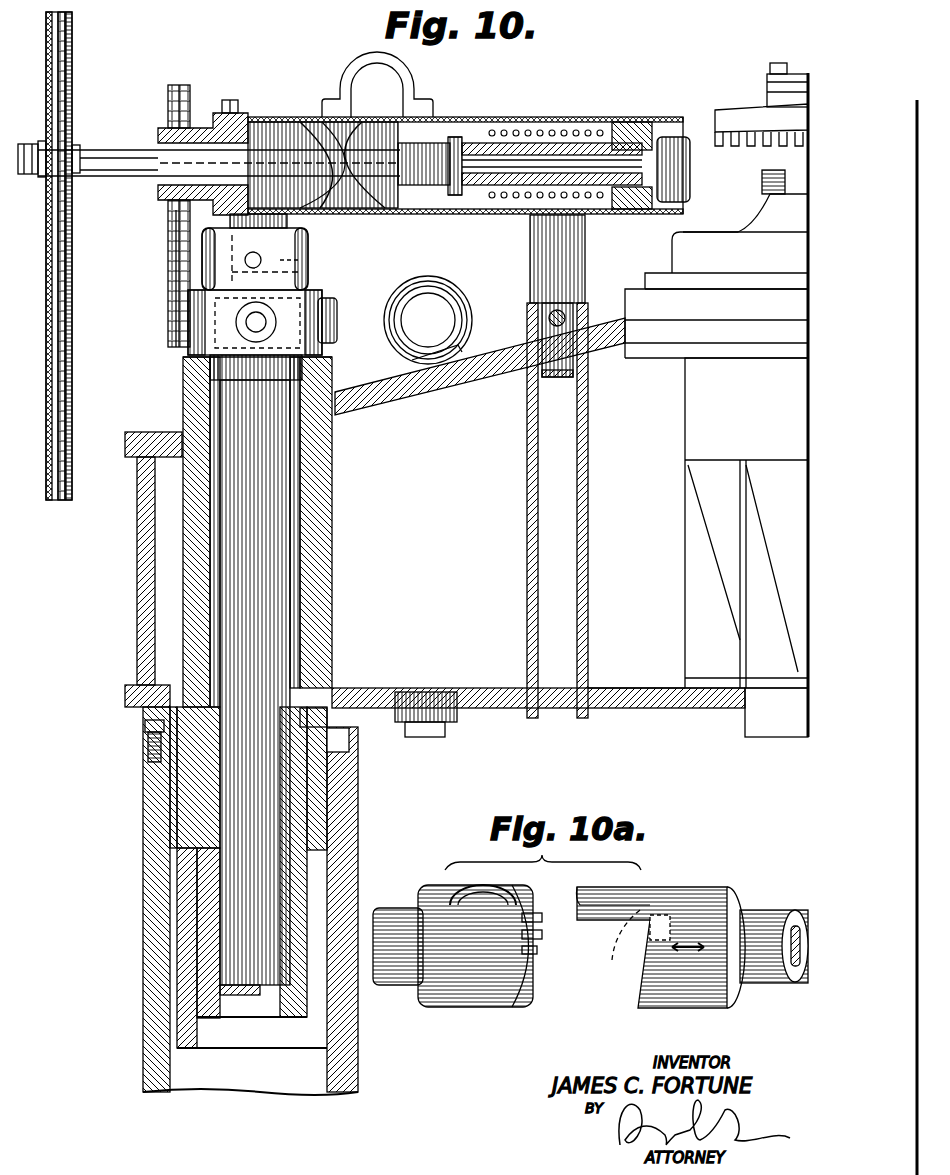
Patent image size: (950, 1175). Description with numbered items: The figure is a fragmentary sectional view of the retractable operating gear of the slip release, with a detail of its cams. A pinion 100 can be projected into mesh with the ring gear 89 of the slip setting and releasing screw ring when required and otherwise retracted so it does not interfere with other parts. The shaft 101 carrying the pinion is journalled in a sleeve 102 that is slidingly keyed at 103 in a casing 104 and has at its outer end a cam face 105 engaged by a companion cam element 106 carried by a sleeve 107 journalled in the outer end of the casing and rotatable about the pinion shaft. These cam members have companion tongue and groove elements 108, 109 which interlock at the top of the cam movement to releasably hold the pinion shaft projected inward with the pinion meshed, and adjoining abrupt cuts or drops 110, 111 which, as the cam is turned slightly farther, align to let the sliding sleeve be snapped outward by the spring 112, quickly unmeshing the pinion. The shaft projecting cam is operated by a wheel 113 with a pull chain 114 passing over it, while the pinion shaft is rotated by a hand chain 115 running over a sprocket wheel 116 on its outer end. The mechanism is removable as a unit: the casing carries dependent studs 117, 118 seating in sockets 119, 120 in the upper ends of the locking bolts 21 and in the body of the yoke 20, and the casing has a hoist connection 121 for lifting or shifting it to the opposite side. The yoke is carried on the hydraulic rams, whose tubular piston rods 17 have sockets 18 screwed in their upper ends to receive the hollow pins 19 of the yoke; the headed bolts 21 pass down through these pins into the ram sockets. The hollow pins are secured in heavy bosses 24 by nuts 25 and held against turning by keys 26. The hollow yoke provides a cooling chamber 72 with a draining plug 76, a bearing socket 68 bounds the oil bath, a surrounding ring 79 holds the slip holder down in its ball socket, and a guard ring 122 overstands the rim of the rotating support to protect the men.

In FIG. 10, the sprocket wheel 116 is at (72, 96).
In FIG. 10, the hand chain 115 is at (70, 418).
In FIG. 10, the shaft 101 is at (120, 166).
In FIG. 10, the wheel 113 is at (168, 222).
In FIG. 10, the dependent stud 117 is at (200, 265).
In FIG. 10, the sleeve 107 is at (205, 128).
In FIG. 10A, the sleeve 107 is at (400, 975).
In FIG. 10, the cam element 106 is at (278, 122).
In FIG. 10A, the cam element 106 is at (520, 1000).
In FIG. 10, the cam face 105 is at (325, 210).
In FIG. 10A, the cam face 105 is at (640, 972).
In FIG. 10, the casing 104 is at (515, 117).
In FIG. 10, the sleeve 102 is at (430, 150).
In FIG. 10A, the sleeve 102 is at (775, 915).
In FIG. 10, the tongue element 108 is at (365, 215).
In FIG. 10A, the tongue element 108 is at (543, 928).
In FIG. 10, the groove element 109 is at (410, 214).
In FIG. 10A, the groove element 109 is at (580, 898).
In FIG. 10, the spring 112 is at (583, 128).
In FIG. 10, the key 103 is at (600, 214).
In FIG. 10, the pinion 100 is at (680, 137).
In FIG. 10, the hoist connection 121 is at (340, 72).
In FIG. 10, the ring gear 89 is at (735, 125).
In FIG. 10, the surrounding ring 79 is at (748, 222).
In FIG. 10, the guard ring 122 is at (672, 255).
In FIG. 10, the dependent stud 118 is at (542, 385).
In FIG. 10, the socket 120 is at (542, 325).
In FIG. 10, the yoke 20 is at (372, 385).
In FIG. 10, the headed bolt 21 is at (300, 248).
In FIG. 10, the socket 119 is at (300, 275).
In FIG. 10, the nut 25 is at (208, 315).
In FIG. 10, the pull chain 114 is at (168, 305).
In FIG. 10, the boss 24 is at (328, 572).
In FIG. 10, the tubular piston rod 17 is at (148, 900).
In FIG. 10, the socket 18 is at (182, 965).
In FIG. 10, the hollow pin 19 is at (300, 887).
In FIG. 10, the key 26 is at (150, 718).
In FIG. 10, the draining plug 76 is at (455, 725).
In FIG. 10, the bearing socket 68 is at (686, 448).
In FIG. 10, the chamber 72 is at (636, 594).
In FIG. 10A, the abrupt cut 110 is at (510, 922).
In FIG. 10A, the abrupt cut 111 is at (622, 915).